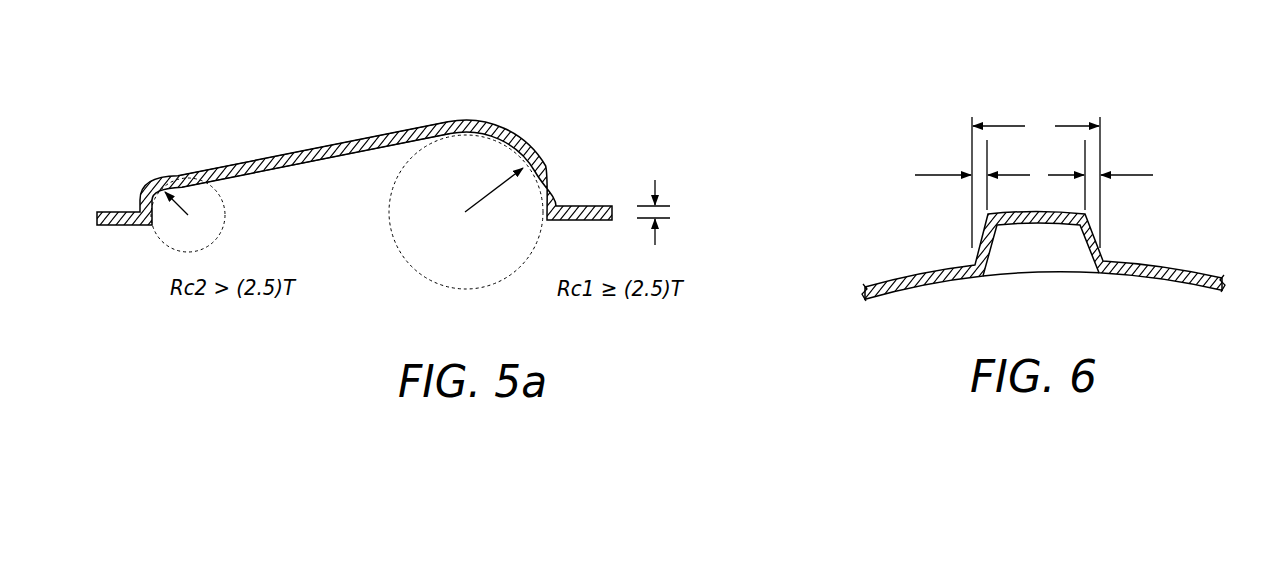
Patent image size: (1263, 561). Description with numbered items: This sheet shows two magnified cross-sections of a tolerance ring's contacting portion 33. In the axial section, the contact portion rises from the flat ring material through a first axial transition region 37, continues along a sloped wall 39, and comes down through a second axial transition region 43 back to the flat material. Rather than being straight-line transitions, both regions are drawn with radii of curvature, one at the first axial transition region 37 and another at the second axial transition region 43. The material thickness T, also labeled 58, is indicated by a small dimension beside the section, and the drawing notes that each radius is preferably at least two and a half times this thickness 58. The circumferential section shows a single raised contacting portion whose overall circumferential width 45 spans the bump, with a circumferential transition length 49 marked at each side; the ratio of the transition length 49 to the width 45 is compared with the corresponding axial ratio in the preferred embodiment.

In FIG. 5a, the dome / raised section of panel 33 is at (435, 111).
In FIG. 5a, the first axial transition region 37 is at (150, 192).
In FIG. 5a, the sloped side wall 39 is at (343, 142).
In FIG. 5a, the second axial transition region 43 is at (518, 136).
In FIG. 5a, the thickness T 58 is at (688, 195).
In FIG. 6, the overall circumferential width 45 is at (1036, 181).
In FIG. 6, the circumferential transition length 49 is at (1035, 175).